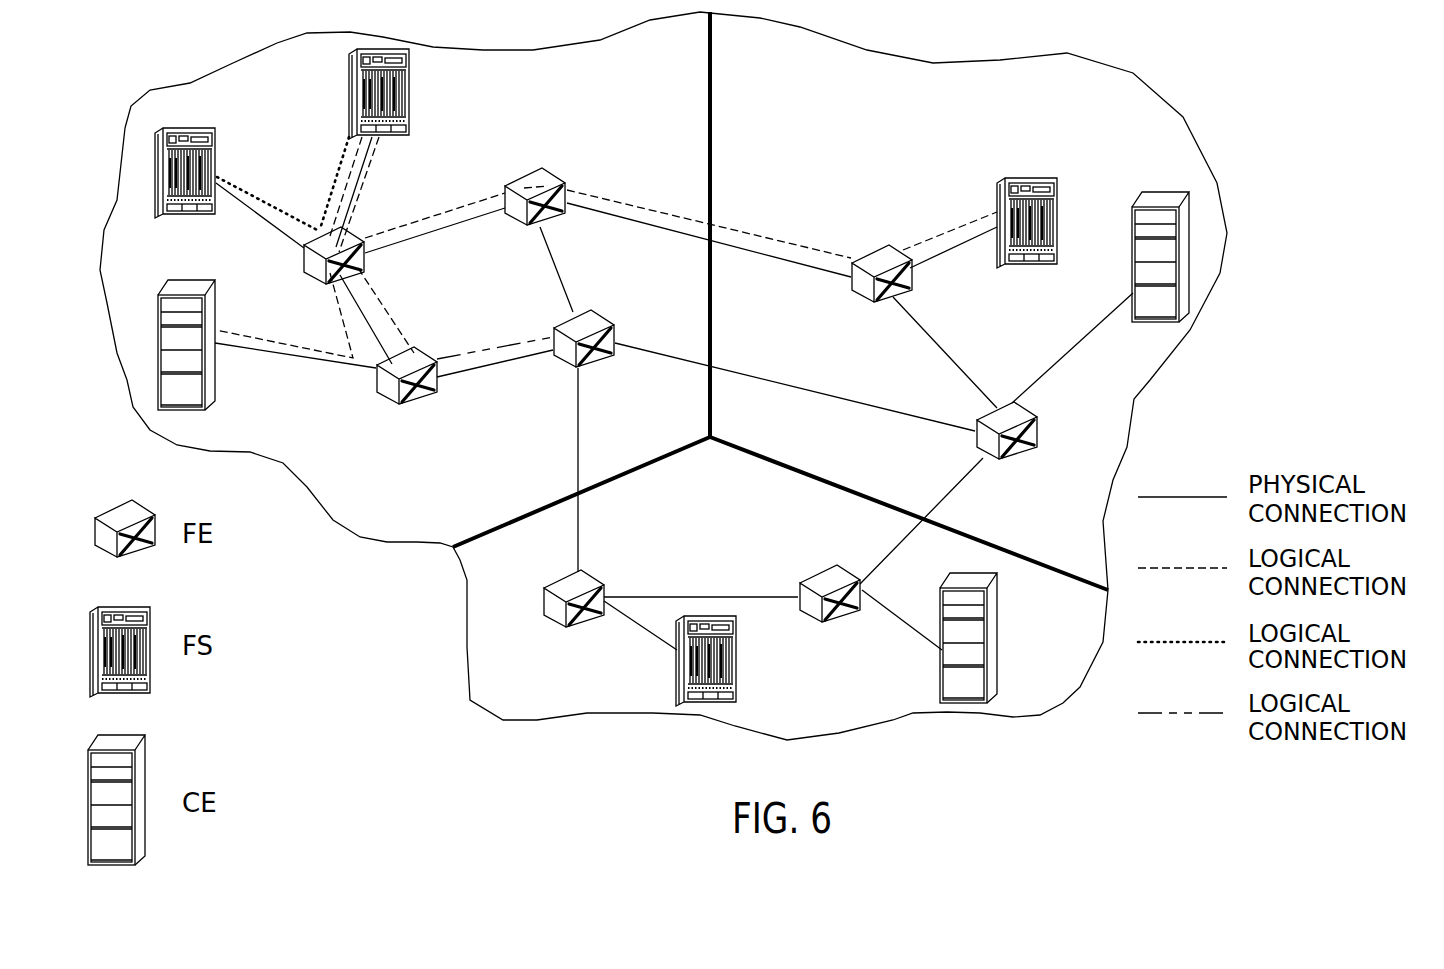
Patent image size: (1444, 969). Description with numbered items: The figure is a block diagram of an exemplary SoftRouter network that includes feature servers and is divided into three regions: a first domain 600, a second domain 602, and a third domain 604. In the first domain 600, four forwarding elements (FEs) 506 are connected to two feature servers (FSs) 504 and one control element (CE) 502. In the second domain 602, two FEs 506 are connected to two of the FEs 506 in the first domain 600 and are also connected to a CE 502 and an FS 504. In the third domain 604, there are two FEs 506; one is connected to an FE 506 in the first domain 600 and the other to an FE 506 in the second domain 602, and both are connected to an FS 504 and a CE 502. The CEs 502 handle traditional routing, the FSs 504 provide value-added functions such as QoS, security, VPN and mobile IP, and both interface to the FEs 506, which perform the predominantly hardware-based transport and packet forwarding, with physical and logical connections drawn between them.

The control element 502 is at (200, 280).
The feature server 504 is at (349, 91).
The forwarding element 506 is at (523, 180).
The domain 1 600 is at (605, 85).
The domain 2 602 is at (834, 96).
The domain 3 604 is at (590, 671).